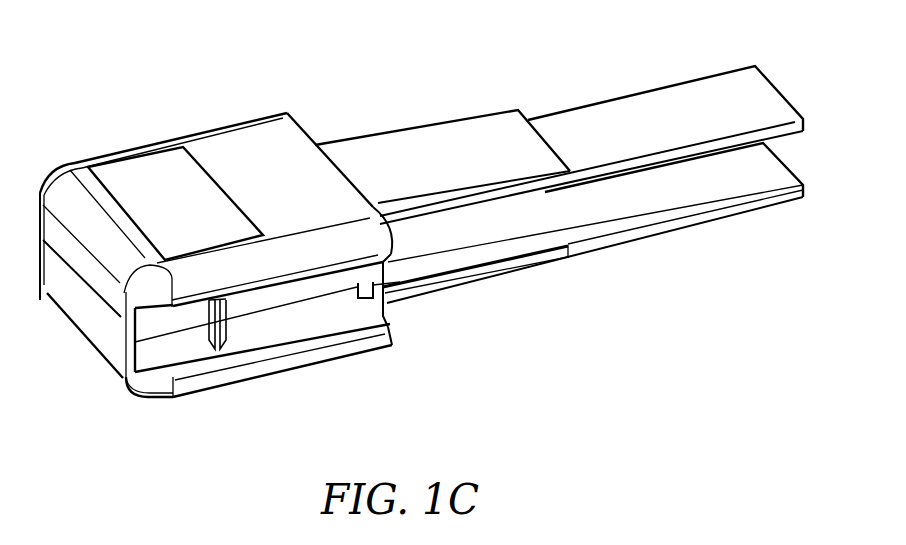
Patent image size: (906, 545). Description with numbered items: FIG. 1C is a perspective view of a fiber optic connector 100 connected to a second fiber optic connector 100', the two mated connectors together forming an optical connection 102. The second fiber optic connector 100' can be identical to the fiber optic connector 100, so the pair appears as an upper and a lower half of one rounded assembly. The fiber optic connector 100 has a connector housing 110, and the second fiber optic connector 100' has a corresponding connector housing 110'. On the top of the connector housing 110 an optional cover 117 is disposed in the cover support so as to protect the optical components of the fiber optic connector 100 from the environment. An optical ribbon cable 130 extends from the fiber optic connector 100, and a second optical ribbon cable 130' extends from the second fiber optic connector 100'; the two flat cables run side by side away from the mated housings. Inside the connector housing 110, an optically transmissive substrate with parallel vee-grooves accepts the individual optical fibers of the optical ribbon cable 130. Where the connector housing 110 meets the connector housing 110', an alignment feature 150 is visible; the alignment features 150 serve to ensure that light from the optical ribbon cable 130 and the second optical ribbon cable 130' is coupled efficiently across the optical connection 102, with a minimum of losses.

The optical connection 102 is at (116, 48).
The fiber optic connector 100 is at (216, 188).
The second fiber optic connector 100' is at (238, 363).
The connector housing 110 is at (263, 168).
The connector housing 110' is at (302, 363).
The cover 117 is at (155, 163).
The optical ribbon cable 130 is at (559, 131).
The second optical ribbon cable 130' is at (593, 223).
The alignment feature 150 is at (214, 366).